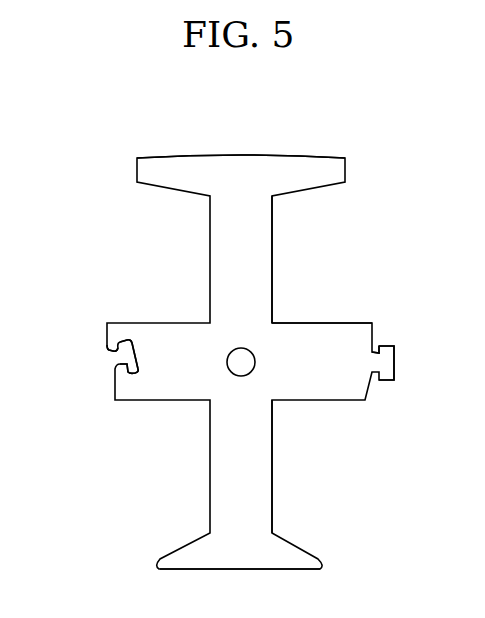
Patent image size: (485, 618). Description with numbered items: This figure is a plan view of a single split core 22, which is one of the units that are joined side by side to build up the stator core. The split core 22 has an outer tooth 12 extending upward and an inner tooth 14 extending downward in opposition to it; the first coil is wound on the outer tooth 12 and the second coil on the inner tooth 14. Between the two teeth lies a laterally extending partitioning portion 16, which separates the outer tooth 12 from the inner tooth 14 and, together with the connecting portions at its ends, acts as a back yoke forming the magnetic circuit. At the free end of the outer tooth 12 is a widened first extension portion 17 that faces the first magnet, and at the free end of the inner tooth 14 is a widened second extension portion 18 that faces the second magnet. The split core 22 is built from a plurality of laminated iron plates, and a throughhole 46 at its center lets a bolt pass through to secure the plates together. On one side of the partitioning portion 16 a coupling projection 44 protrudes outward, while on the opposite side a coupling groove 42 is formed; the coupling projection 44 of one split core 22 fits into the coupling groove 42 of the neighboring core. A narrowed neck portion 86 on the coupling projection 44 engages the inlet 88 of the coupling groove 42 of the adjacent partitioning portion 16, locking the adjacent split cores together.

The split core 22 is at (350, 144).
The first extension portion 17 is at (237, 160).
The outer tooth 12 is at (262, 236).
The partitioning portion 16 is at (347, 323).
The narrowed neck portion 86 is at (377, 344).
The coupling projection 44 is at (396, 361).
The throughhole 46 is at (245, 366).
The inner tooth 14 is at (265, 489).
The second extension portion 18 is at (246, 562).
The inlet 88 is at (119, 372).
The coupling groove 42 is at (130, 373).